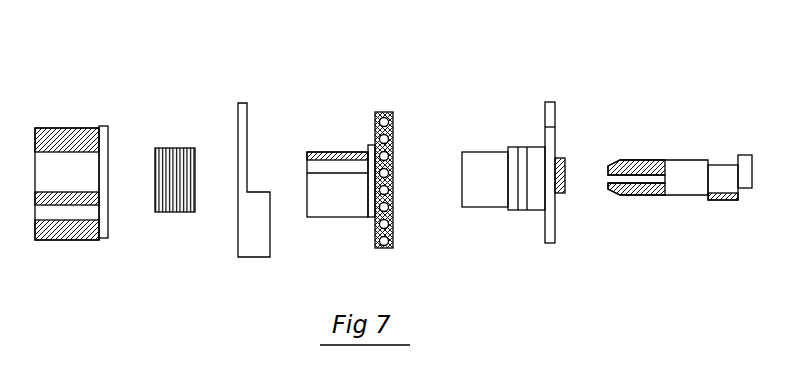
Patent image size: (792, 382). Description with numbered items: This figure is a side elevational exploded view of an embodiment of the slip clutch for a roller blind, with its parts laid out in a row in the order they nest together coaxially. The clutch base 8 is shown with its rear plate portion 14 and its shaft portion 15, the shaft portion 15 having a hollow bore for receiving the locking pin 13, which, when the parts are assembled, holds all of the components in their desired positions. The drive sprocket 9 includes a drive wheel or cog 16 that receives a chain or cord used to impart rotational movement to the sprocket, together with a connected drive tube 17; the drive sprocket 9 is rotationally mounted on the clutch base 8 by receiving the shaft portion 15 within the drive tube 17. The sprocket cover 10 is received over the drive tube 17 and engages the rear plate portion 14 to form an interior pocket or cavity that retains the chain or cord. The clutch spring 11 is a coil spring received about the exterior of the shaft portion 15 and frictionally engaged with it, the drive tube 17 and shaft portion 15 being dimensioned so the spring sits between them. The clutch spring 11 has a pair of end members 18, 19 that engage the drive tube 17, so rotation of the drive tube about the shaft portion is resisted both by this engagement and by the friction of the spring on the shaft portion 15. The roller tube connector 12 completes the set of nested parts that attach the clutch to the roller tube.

The clutch base 8 is at (555, 222).
The drive sprocket 9 is at (393, 225).
The sprocket cover 10 is at (241, 102).
The clutch spring 11 is at (177, 148).
The roller tube connector 12 is at (80, 238).
The locking pin 13 is at (698, 160).
The rear plate portion 14 is at (540, 102).
The shaft portion 15 is at (483, 150).
The drive wheel or cog 16 is at (378, 122).
The drive tube 17 is at (325, 150).
The end member 18 is at (195, 148).
The end member 19 is at (155, 168).